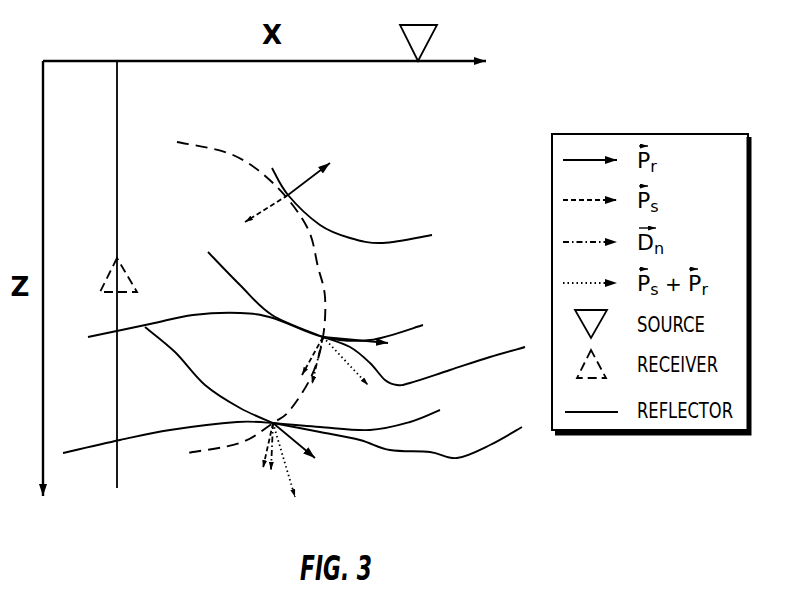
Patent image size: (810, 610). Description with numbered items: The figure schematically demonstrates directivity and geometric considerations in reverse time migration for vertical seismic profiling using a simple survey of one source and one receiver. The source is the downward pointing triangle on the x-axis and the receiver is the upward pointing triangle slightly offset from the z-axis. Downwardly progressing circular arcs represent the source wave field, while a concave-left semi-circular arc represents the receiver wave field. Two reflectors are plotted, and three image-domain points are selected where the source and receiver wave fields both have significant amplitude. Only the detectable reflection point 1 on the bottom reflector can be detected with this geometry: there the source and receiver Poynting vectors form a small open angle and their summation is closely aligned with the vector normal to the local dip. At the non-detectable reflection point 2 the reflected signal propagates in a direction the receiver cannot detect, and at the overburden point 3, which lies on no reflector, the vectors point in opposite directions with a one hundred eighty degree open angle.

The detectable reflection point 1 is at (289, 444).
The non-detectable reflection point 2 is at (345, 344).
The overburden point 3 is at (287, 191).